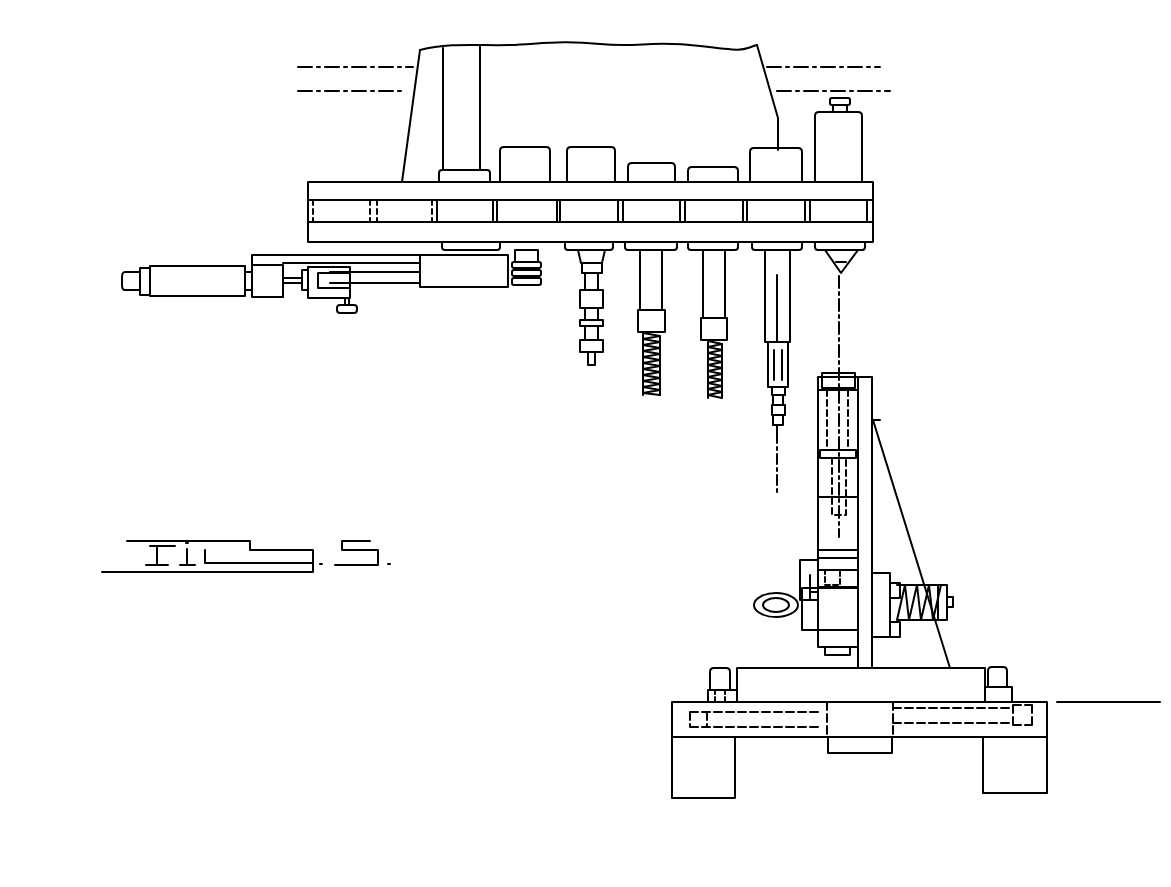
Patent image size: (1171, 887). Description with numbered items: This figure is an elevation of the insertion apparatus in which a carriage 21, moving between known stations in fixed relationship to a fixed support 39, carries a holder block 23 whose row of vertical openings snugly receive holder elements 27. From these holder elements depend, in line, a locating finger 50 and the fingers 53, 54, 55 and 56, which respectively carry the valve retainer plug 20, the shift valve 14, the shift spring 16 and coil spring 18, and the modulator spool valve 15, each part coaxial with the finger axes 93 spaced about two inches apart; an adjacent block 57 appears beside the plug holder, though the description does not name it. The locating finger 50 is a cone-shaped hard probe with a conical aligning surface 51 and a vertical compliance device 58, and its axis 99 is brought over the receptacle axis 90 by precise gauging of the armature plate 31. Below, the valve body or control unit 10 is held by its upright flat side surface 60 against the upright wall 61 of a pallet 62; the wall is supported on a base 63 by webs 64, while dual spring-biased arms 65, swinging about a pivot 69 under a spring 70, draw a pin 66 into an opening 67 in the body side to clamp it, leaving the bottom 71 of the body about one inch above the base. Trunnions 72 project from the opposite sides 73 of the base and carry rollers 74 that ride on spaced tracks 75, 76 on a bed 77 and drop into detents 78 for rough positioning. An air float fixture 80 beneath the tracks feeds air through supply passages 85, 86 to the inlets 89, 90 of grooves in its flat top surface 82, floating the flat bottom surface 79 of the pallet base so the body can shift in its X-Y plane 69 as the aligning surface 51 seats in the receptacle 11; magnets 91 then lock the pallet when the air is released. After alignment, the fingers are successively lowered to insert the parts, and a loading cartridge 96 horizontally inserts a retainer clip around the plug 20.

The valve body 10 is at (846, 518).
The receptacle 11 is at (845, 404).
The shift valve 14 is at (580, 346).
The modulator spool valve 15 is at (770, 418).
The shift spring 16 is at (645, 380).
The coil spring 18 is at (715, 396).
The valve retainer plug 20 is at (525, 286).
The carriage 21 is at (544, 176).
The holder block 23 is at (325, 185).
The holder element 27 is at (643, 168).
The armature plate 31 is at (415, 127).
The fixed support 39 is at (880, 69).
The locating finger 50 is at (864, 265).
The aligning surface 51 is at (835, 264).
The finger 53 is at (590, 256).
The finger 54 is at (640, 298).
The finger 55 is at (705, 310).
The finger 56 is at (770, 305).
The block 57 is at (515, 248).
The vertical compliance device 58 is at (850, 103).
The upright flat side surface 60 is at (870, 465).
The upright wall 61 is at (880, 485).
The pallet 62 is at (927, 521).
The base 63 is at (935, 668).
The webs 64 is at (940, 633).
The spring-biased arms 65 is at (800, 582).
The pin 66 is at (810, 580).
The opening 67 is at (815, 568).
The pivot 69 is at (812, 613).
The spring 70 is at (920, 580).
The bottom of valve body 71 is at (822, 652).
The trunnions 72 is at (705, 683).
The opposite sides 73 is at (738, 665).
The rollers 74 is at (718, 672).
The track 75 is at (988, 697).
The track 76 is at (1010, 678).
The bed 77 is at (995, 786).
The detents 78 is at (702, 688).
The flat bottom surface 79 is at (860, 712).
The air float fixture 80 is at (849, 694).
The flat top surface 82 is at (795, 697).
The supply passage 85 is at (945, 725).
The supply passage 86 is at (728, 722).
The inlet 89 is at (905, 700).
The receptacle axis 90 is at (842, 433).
The magnets 91 is at (840, 746).
The finger axes 93 is at (775, 475).
The loading cartridge 96 is at (435, 275).
The axis of locator finger 99 is at (842, 310).